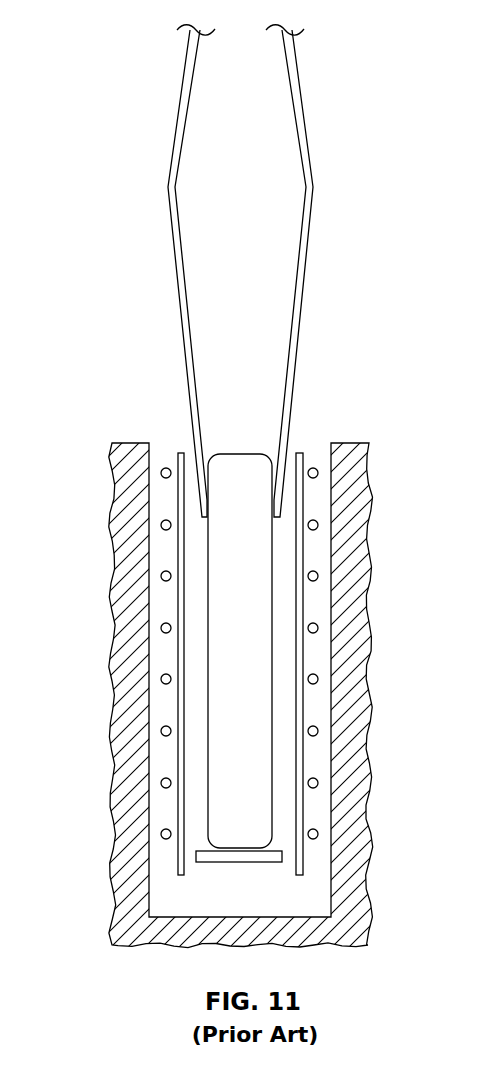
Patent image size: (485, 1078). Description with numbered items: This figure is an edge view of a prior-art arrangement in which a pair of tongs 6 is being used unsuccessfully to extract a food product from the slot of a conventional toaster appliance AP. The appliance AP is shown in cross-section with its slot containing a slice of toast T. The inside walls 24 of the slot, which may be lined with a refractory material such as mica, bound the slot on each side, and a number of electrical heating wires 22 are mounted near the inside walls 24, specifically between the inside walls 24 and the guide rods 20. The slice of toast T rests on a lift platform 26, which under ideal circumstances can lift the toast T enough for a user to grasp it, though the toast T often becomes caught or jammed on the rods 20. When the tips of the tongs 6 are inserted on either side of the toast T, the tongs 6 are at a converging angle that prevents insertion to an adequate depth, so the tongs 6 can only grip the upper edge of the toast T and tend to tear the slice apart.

The tongs 6 is at (195, 85).
The guide rods 20 is at (178, 650).
The electrical heating wires 22 is at (161, 526).
The inside walls 24 is at (153, 461).
The lift platform 26 is at (243, 862).
The slice of toast T is at (248, 455).
The toaster appliance AP is at (343, 443).